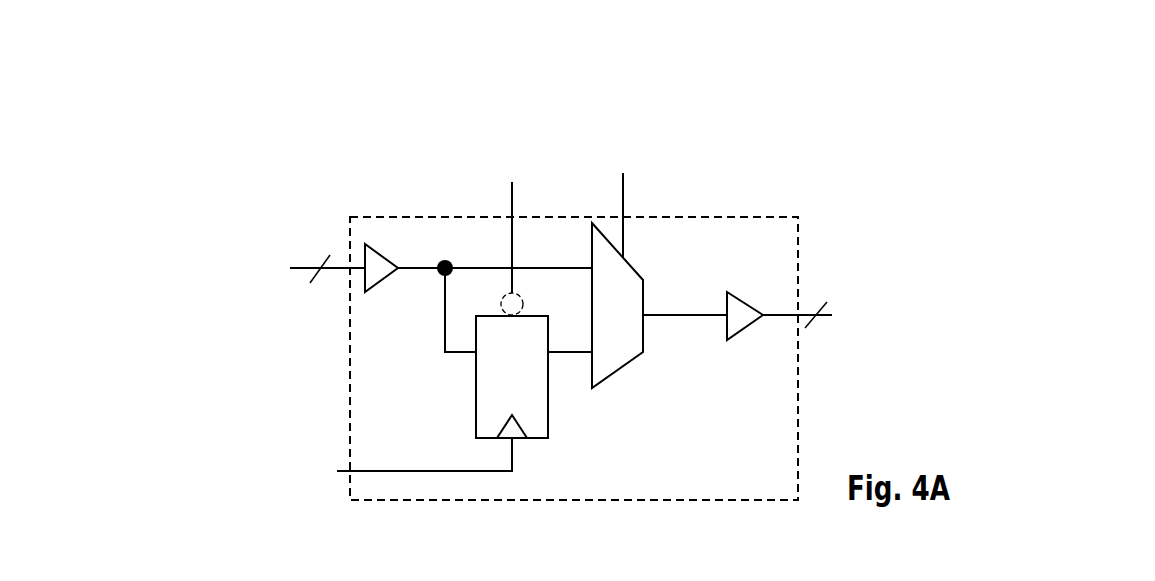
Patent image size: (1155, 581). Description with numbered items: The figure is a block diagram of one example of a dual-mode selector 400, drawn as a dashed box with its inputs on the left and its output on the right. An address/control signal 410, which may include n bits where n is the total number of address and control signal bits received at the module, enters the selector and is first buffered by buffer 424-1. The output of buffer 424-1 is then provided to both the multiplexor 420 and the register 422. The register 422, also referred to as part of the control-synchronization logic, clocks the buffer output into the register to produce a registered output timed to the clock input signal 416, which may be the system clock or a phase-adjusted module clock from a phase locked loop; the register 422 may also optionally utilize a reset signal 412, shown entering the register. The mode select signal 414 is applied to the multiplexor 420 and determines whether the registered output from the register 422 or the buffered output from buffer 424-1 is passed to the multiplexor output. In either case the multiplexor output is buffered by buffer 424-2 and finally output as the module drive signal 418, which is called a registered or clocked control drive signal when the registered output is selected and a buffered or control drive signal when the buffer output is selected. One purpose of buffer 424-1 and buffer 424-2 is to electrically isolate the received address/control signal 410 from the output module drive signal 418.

The dual-mode selector 400 is at (276, 196).
The address/control signal 410 is at (258, 308).
The reset signal 412 is at (523, 179).
The mode select signal 414 is at (677, 179).
The clock input signal 416 is at (315, 483).
The module drive signal 418 is at (1077, 328).
The multiplexor 420 is at (762, 434).
The register 422 is at (477, 380).
The buffer 424-1 is at (435, 181).
The buffer 424-2 is at (778, 258).